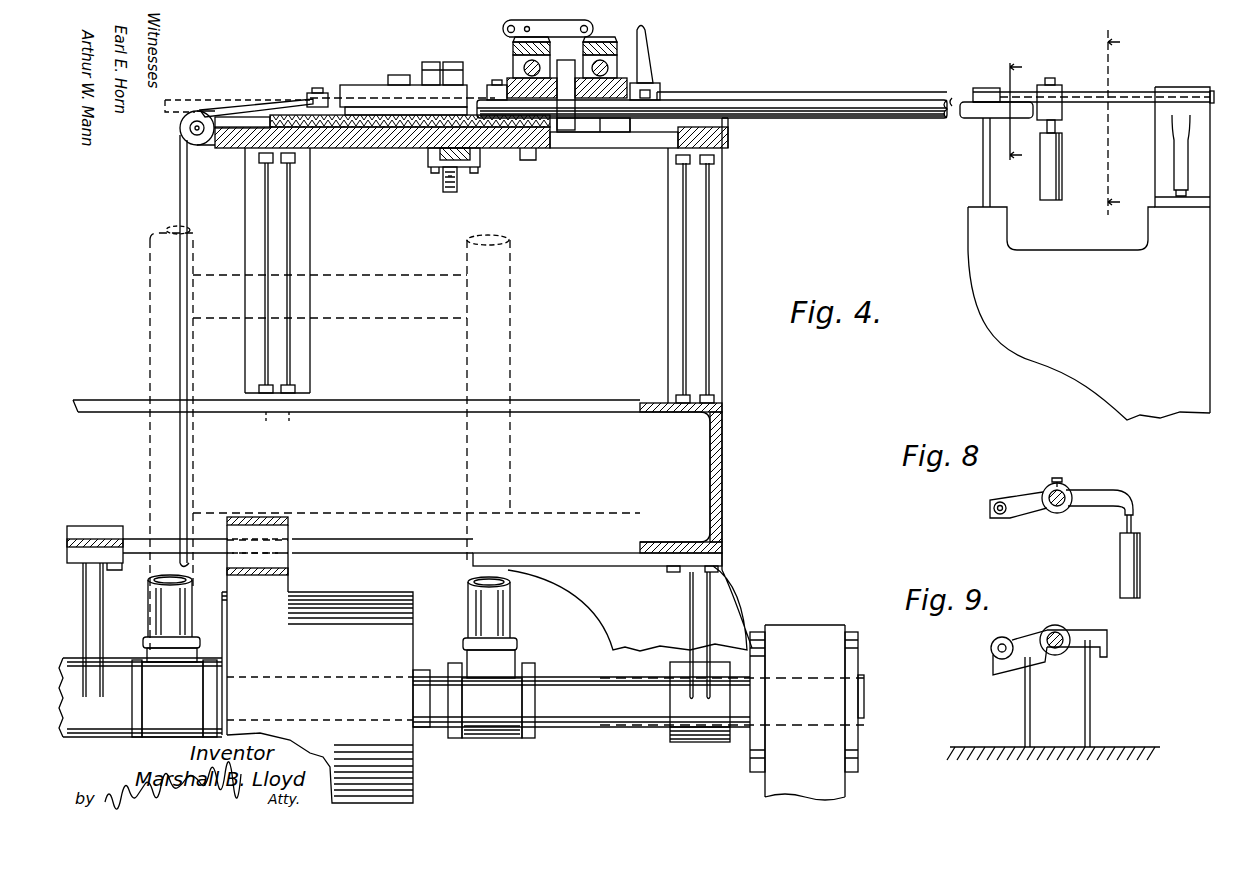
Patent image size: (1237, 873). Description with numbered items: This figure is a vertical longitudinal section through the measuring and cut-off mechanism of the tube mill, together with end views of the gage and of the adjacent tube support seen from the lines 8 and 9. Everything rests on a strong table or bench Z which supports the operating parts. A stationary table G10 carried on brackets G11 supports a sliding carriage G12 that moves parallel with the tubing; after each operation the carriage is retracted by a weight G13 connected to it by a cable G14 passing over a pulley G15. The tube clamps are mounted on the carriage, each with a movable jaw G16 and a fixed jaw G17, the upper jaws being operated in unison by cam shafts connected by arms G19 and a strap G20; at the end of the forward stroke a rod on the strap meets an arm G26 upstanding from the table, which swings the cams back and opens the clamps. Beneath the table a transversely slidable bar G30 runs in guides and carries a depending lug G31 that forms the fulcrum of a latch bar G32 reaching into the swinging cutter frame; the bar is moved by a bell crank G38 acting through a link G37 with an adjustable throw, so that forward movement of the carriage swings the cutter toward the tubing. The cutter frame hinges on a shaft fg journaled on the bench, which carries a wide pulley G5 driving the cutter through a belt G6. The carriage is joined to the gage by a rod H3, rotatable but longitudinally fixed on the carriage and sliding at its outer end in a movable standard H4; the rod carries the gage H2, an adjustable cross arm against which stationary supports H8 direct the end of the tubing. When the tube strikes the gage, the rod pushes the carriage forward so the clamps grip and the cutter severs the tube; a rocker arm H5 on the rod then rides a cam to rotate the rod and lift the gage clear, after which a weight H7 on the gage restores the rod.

In FIG. 4, the cable G14 is at (244, 92).
In FIG. 4, the pulley G15 is at (199, 146).
In FIG. 4, the sliding carriage G12 is at (337, 132).
In FIG. 4, the stationary table G10 is at (397, 147).
In FIG. 4, the brackets G11 is at (258, 221).
In FIG. 4, the bell crank G38 is at (385, 92).
In FIG. 4, the link G37 is at (517, 66).
In FIG. 4, the arms G19 is at (512, 38).
In FIG. 4, the strap G20 is at (565, 28).
In FIG. 4, the movable jaw G16 is at (577, 84).
In FIG. 4, the arm G26 is at (650, 54).
In FIG. 4, the fixed jaw G17 is at (532, 140).
In FIG. 4, the transversely slidable bar G30 is at (438, 170).
In FIG. 4, the depending lug G31 is at (455, 186).
In FIG. 4, the latch bar G32 is at (450, 194).
In FIG. 4, the rocker arm H5 is at (650, 93).
In FIG. 4, the rod H3 is at (722, 98).
In FIG. 8, the rod H3 is at (1057, 508).
In FIG. 9, the rod H3 is at (1055, 656).
In FIG. 4, the gage H2 is at (1051, 105).
In FIG. 8, the gage H2 is at (1098, 496).
In FIG. 4, the supports H8 is at (981, 127).
In FIG. 9, the supports H8 is at (1092, 663).
In FIG. 4, the weight H7 is at (1050, 198).
In FIG. 8, the weight H7 is at (1142, 564).
In FIG. 4, the movable standard H4 is at (1089, 253).
In FIG. 4, the table or bench Z is at (557, 410).
In FIG. 4, the weight G13 is at (498, 625).
In FIG. 4, the belt G6 is at (273, 660).
In FIG. 4, the wide pulley G5 is at (404, 698).
In FIG. 4, the shaft fg is at (588, 712).
In FIG. 4, the section line 8— 8 is at (1112, 121).
In FIG. 4, the section line 9— 9 is at (1014, 110).